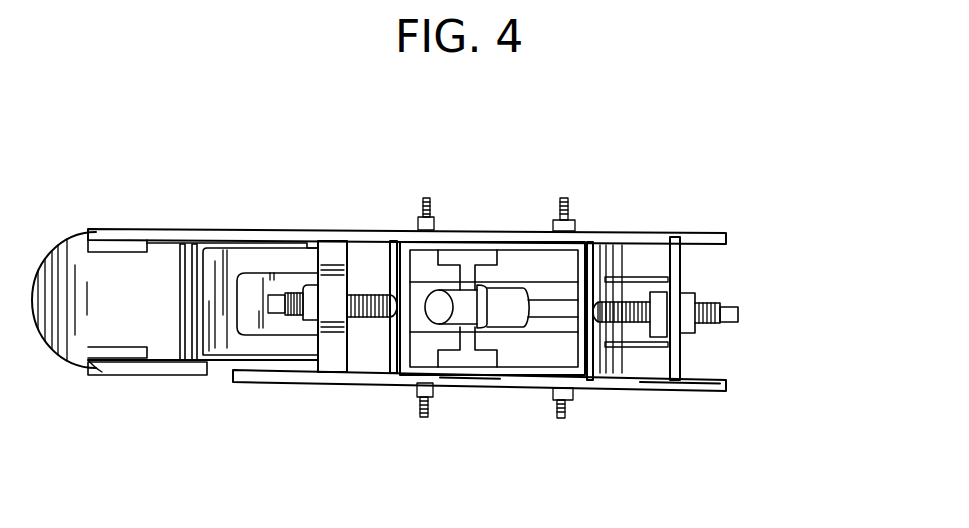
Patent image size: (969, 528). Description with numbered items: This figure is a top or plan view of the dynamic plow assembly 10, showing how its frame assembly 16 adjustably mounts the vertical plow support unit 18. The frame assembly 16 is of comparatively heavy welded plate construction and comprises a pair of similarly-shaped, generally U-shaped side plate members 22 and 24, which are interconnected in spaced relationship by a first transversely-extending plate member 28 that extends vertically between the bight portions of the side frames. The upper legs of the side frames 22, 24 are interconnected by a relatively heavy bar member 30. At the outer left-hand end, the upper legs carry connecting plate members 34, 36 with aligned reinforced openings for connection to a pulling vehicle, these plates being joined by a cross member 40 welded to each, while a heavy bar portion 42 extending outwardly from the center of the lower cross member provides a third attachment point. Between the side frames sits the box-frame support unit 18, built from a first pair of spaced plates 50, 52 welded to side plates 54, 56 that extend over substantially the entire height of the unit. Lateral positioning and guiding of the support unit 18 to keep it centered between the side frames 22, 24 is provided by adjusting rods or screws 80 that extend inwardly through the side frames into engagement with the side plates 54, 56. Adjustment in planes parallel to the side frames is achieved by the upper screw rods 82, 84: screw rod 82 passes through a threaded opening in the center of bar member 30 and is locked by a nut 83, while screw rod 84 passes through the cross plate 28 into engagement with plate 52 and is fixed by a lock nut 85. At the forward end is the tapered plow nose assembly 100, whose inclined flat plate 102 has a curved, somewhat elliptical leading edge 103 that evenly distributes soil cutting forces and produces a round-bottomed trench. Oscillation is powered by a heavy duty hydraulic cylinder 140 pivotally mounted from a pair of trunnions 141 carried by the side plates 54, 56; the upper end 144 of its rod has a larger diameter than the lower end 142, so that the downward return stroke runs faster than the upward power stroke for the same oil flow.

The dynamic plow assembly 10 is at (486, 162).
The frame assembly 16 is at (690, 400).
The plow support unit 18 is at (470, 400).
The side plate member 22 is at (718, 386).
The side plate member 24 is at (593, 234).
The first transversely-extending plate member 28 is at (682, 252).
The bar member 30 is at (338, 245).
The connecting plate member 34 is at (222, 373).
The connecting plate member 36 is at (172, 238).
The cross member 40 is at (193, 290).
The heavy bar portion 42 is at (252, 277).
The spaced plate 50 is at (400, 348).
The spaced plate 52 is at (600, 258).
The side plate 54 is at (575, 386).
The side plate 56 is at (510, 242).
The adjusting rod 80 is at (421, 212).
The upper screw rod 82 is at (375, 308).
The nut 83 is at (310, 323).
The screw rod 84 is at (717, 323).
The lock nut 85 is at (695, 292).
The plow nose assembly 100 is at (62, 301).
The inclined flat plate 102 is at (83, 343).
The leading edge 103 is at (45, 326).
The hydraulic cylinder 140 is at (502, 325).
The trunnions 141 is at (477, 276).
The lower end of cylinder rod 142 is at (568, 312).
The upper end of cylinder rod 144 is at (455, 297).